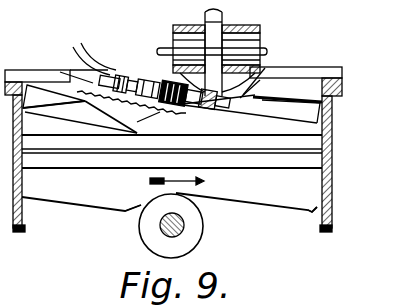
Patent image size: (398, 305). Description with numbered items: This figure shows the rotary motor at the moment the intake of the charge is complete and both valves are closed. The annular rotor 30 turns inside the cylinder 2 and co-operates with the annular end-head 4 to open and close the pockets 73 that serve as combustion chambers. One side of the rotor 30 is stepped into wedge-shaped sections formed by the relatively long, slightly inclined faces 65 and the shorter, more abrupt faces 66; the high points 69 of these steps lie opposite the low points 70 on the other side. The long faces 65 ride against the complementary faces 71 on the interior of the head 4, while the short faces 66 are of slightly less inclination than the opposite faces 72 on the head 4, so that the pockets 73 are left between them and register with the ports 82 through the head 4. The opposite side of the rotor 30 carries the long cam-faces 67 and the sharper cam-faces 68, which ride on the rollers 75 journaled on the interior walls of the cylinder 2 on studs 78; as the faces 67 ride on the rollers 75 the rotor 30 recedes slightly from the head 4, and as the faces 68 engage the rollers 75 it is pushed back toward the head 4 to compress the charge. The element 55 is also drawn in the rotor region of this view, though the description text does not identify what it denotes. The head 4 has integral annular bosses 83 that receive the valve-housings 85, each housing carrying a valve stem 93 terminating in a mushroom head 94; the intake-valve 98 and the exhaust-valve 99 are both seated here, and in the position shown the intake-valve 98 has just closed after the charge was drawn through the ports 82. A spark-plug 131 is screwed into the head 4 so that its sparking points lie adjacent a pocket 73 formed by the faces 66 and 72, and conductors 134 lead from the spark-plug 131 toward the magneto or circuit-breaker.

The cylinder 2 is at (333, 150).
The annular end-head 4 is at (330, 68).
The annular rotor 30 is at (218, 180).
The guide rails 55 is at (172, 151).
The long inclined faces 65 is at (170, 109).
The short inclined faces 66 is at (297, 112).
The long cam-faces 67 is at (169, 212).
The short cam-faces 68 is at (126, 210).
The high points 69 is at (183, 107).
The low points 70 is at (81, 125).
The long inclined faces of head 71 is at (98, 88).
The short inclined faces of head 72 is at (164, 92).
The pockets 73 is at (240, 98).
The rollers 75 is at (196, 245).
The studs 78 is at (166, 230).
The ports 82 is at (263, 68).
The annular bosses 83 is at (220, 12).
The valve-housings 85 is at (216, 42).
The valve stems 93 is at (160, 50).
The mushroom heads 94 is at (212, 50).
The intake-valve 98 is at (235, 45).
The exhaust-valve 99 is at (196, 60).
The spark-plug 131 is at (167, 75).
The conductors 134 is at (74, 60).